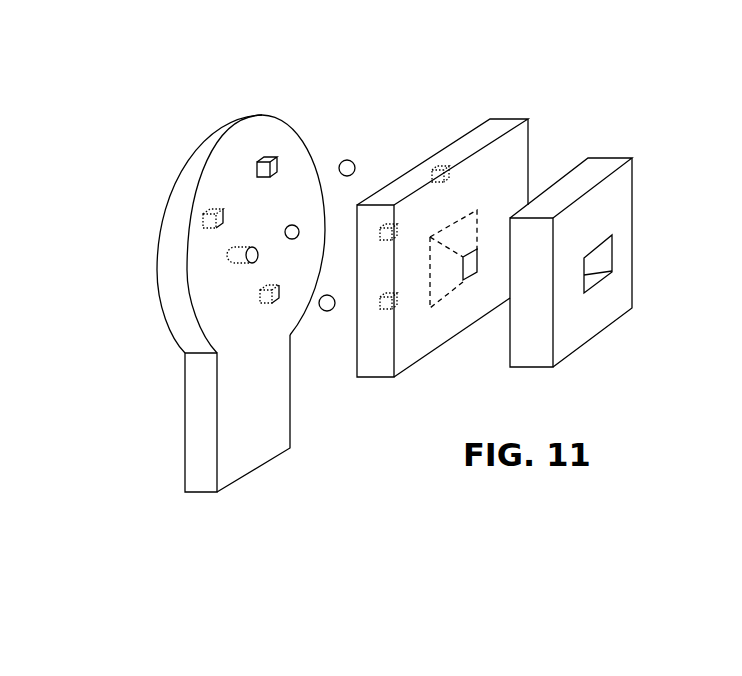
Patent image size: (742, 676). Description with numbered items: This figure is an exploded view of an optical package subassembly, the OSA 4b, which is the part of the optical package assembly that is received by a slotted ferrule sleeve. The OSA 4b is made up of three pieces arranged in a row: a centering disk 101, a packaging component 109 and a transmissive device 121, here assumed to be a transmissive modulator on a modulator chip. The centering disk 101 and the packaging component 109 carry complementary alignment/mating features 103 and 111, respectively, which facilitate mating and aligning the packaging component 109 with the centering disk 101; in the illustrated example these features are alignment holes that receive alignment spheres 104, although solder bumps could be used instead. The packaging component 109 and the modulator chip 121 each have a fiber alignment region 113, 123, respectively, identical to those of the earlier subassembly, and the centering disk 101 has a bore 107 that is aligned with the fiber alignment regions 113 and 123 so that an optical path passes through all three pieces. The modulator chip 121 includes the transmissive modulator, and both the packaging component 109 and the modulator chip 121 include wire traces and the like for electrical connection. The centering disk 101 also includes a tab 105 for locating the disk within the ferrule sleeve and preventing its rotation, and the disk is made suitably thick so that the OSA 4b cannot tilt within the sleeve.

The OSA 4b is at (405, 76).
The centering disk 101 is at (202, 157).
The alignment/mating features 103 is at (265, 157).
The alignment spheres 104 is at (294, 225).
The tab 105 is at (193, 470).
The bore 107 is at (253, 265).
The packaging component 109 is at (499, 125).
The alignment/mating features 111 is at (428, 158).
The fiber alignment region 113 is at (448, 280).
The transmissive device 121 is at (598, 163).
The fiber alignment region 123 is at (589, 282).